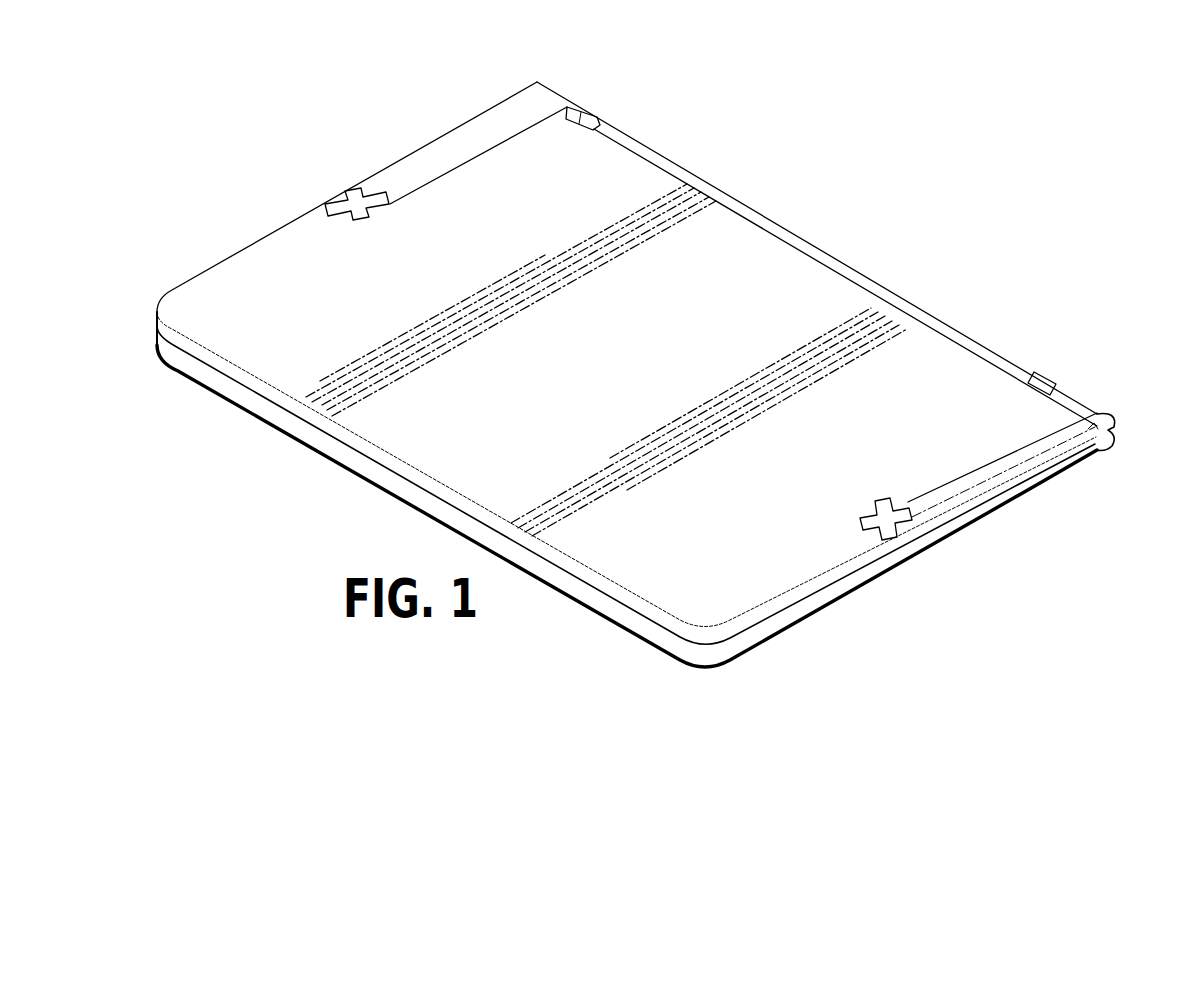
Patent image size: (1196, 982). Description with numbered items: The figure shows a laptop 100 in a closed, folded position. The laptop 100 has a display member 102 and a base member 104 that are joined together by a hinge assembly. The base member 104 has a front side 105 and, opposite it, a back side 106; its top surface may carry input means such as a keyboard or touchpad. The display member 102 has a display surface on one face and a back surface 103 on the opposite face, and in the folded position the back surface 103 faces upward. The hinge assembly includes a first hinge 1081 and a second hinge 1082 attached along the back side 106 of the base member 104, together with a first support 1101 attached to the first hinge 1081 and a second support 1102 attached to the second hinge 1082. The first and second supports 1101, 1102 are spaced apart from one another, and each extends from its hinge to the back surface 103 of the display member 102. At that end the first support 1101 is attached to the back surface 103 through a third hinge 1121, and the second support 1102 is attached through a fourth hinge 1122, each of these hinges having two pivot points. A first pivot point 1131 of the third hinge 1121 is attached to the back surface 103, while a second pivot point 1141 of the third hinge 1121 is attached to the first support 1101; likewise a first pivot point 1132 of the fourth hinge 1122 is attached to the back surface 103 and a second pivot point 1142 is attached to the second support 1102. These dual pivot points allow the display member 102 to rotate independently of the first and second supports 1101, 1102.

The laptop 100 is at (797, 152).
The display member 102 is at (242, 278).
The back surface 103 is at (640, 372).
The base member 104 is at (852, 593).
The front side 105 is at (358, 499).
The back side 106 is at (1115, 426).
The first hinge 1081 is at (592, 110).
The second hinge 1082 is at (1053, 384).
The first support 1101 is at (447, 142).
The second support 1102 is at (980, 452).
The third hinge 1121 is at (338, 200).
The fourth hinge 1122 is at (870, 512).
The first pivot point 1131 is at (345, 216).
The first pivot point 1132 is at (868, 526).
The second pivot point 1141 is at (357, 192).
The second pivot point 1142 is at (886, 500).